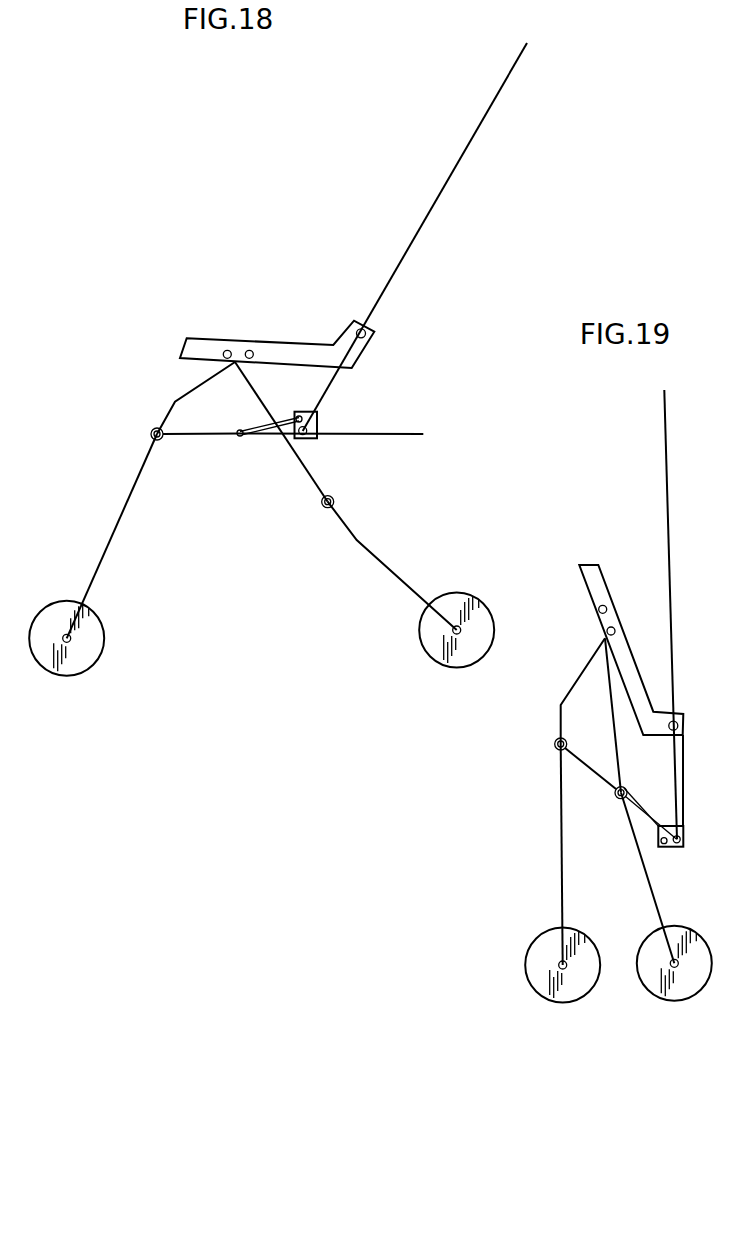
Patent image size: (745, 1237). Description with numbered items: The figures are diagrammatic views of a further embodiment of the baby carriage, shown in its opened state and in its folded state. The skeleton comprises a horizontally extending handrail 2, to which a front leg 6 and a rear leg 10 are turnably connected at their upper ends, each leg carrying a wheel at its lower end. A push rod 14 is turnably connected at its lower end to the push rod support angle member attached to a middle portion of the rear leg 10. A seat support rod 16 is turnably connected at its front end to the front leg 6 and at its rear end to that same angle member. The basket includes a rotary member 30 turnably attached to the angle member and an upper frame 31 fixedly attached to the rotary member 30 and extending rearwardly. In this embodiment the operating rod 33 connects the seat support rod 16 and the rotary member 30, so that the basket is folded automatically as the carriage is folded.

In FIG. 18, the handrail 2 is at (304, 352).
In FIG. 19, the handrail 2 is at (622, 590).
In FIG. 18, the front leg 6 is at (123, 507).
In FIG. 19, the front leg 6 is at (560, 780).
In FIG. 18, the rear leg 10 is at (385, 565).
In FIG. 19, the rear leg 10 is at (657, 897).
In FIG. 18, the push rod 14 is at (452, 173).
In FIG. 19, the push rod 14 is at (667, 533).
In FIG. 18, the seat support rod 16 is at (187, 440).
In FIG. 19, the seat support rod 16 is at (593, 777).
In FIG. 18, the rotary member 30 is at (317, 418).
In FIG. 19, the rotary member 30 is at (683, 835).
In FIG. 18, the upper frame 31 is at (417, 434).
In FIG. 19, the upper frame 31 is at (683, 775).
In FIG. 18, the operating rod 33 is at (250, 427).
In FIG. 19, the operating rod 33 is at (645, 827).